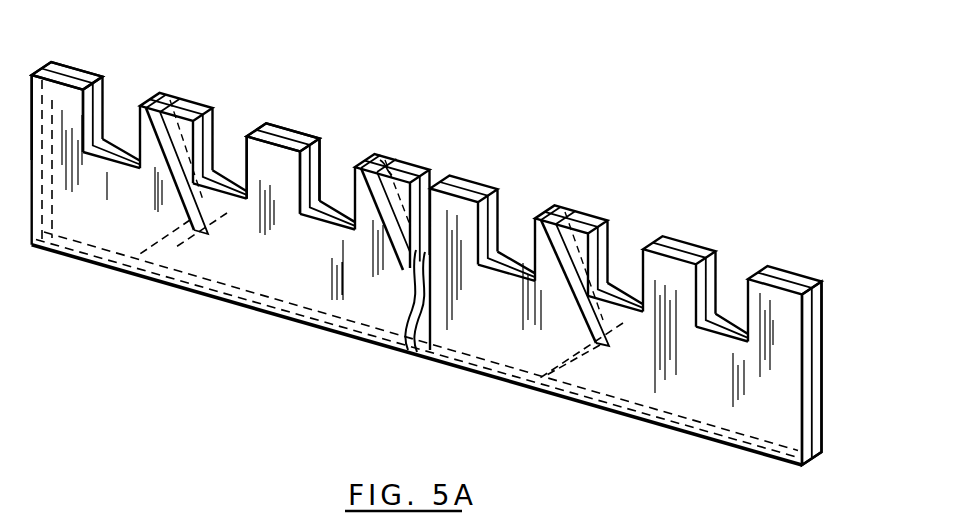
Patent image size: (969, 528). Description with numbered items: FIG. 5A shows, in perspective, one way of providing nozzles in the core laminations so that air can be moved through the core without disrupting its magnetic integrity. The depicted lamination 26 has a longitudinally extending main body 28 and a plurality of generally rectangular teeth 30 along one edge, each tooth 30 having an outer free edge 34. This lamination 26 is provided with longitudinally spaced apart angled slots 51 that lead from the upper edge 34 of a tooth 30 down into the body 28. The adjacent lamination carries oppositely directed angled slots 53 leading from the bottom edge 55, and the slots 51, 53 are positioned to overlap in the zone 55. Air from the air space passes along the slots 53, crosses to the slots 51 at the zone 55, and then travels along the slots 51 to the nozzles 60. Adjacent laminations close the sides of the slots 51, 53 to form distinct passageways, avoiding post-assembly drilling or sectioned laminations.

The lamination 26 is at (826, 334).
The main body 28 is at (300, 273).
The tooth 30 is at (278, 167).
The outer free edge 34 is at (60, 80).
The angled slot 51 is at (160, 143).
The oppositely directed angled slot 53 is at (178, 240).
The overlap zone 55 is at (189, 220).
The nozzle 60 is at (385, 160).